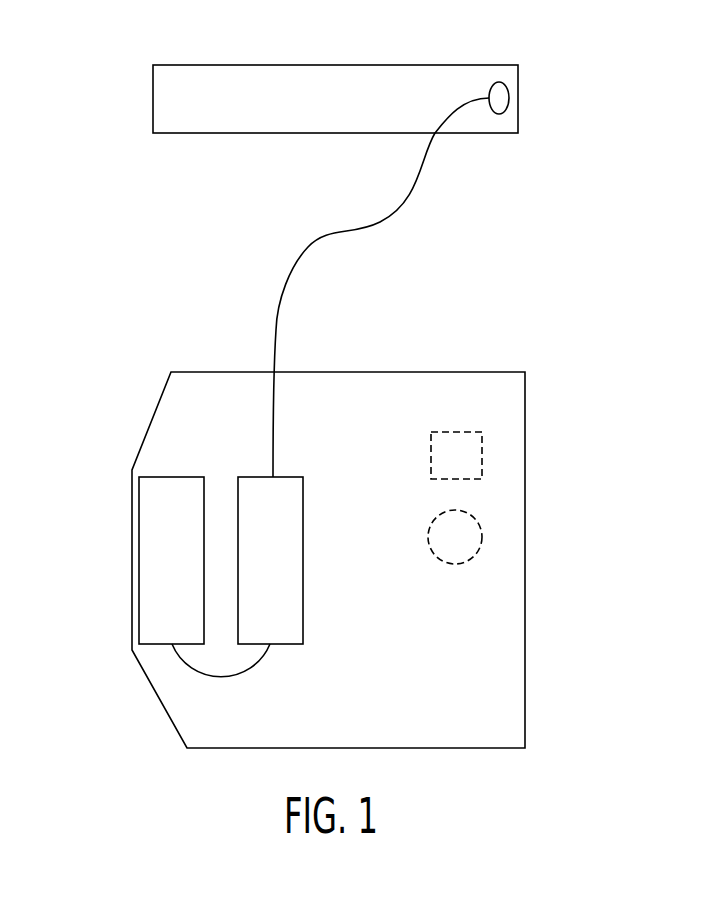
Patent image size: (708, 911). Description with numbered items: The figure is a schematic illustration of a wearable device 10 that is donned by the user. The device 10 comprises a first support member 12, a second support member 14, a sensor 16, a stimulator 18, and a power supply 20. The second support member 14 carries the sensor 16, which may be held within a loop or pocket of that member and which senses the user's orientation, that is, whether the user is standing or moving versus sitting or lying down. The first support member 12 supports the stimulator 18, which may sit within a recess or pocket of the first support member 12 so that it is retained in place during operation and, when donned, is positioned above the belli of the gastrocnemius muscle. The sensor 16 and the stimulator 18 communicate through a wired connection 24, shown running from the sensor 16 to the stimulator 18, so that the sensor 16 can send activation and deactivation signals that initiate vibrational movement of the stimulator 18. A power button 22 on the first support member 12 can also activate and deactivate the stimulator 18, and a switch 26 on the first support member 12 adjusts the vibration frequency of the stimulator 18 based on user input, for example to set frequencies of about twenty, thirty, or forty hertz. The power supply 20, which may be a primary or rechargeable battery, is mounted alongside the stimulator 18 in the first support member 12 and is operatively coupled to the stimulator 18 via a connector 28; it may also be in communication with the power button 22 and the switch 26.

The device 10 is at (80, 88).
The first support member 12 is at (373, 365).
The second support member 14 is at (293, 144).
The sensor 16 is at (499, 114).
The stimulator 18 is at (172, 477).
The power supply 20 is at (303, 561).
The power button 22 is at (455, 432).
The wired connection 24 is at (276, 322).
The switch 26 is at (478, 550).
The connector 28 is at (222, 677).